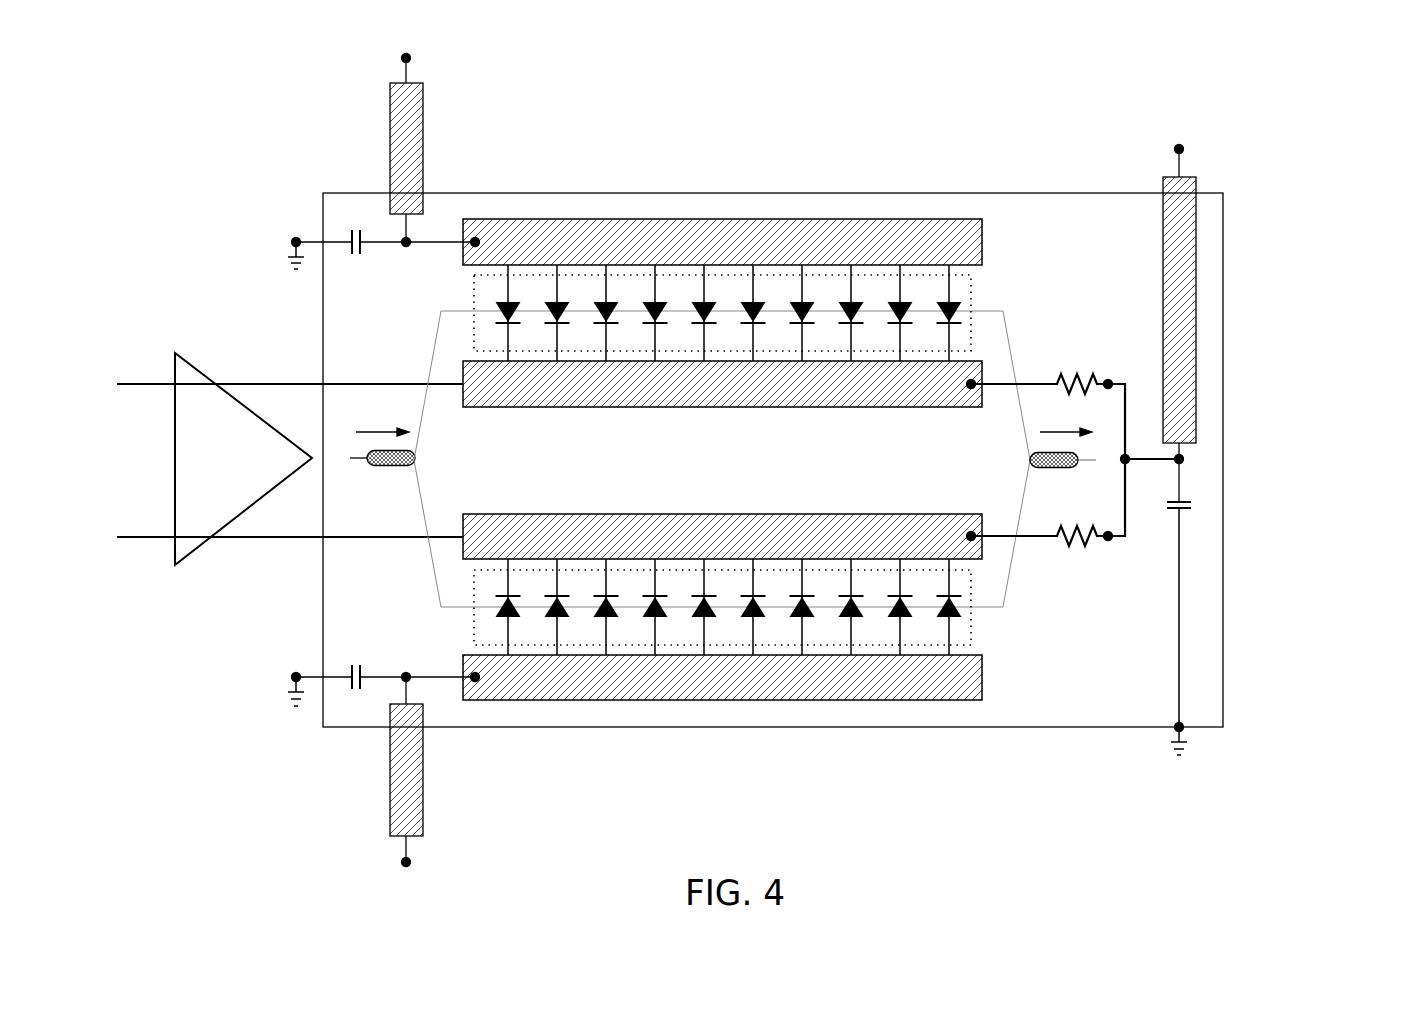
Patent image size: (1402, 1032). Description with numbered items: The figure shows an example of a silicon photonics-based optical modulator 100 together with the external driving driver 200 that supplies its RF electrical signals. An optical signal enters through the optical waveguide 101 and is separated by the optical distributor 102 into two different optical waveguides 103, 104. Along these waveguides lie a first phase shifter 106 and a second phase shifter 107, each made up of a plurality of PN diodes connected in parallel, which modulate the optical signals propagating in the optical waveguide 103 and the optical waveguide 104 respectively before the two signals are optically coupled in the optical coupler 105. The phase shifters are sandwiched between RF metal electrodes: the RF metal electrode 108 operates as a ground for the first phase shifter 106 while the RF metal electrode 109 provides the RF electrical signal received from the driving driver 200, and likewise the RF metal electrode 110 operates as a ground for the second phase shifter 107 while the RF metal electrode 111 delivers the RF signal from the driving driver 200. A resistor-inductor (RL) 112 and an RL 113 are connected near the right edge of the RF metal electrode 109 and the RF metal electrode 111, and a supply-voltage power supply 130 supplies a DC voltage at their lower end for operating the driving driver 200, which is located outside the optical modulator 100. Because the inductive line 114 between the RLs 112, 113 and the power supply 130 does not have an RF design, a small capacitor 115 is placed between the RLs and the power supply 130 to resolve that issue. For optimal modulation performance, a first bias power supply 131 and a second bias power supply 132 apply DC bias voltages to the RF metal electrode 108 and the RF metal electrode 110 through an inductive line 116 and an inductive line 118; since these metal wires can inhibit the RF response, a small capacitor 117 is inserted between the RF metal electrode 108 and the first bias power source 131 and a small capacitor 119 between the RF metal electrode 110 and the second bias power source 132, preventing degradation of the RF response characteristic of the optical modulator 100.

The optical modulator 100 is at (773, 192).
The optical waveguide 101 is at (360, 458).
The optical distributor 102 is at (388, 467).
The optical waveguide 103 is at (437, 347).
The optical waveguide 104 is at (437, 568).
The optical coupler 105 is at (1055, 467).
The first phase shifter 106 is at (975, 293).
The second phase shifter 107 is at (975, 630).
The RF metal electrode 108 is at (985, 240).
The RF metal electrode 109 is at (915, 408).
The RF metal electrode 110 is at (985, 676).
The RF metal electrode 111 is at (915, 513).
The resistor-inductor 112 is at (1090, 372).
The resistor-inductor 113 is at (1083, 545).
The inductive line 114 is at (1196, 310).
The small capacitor 115 is at (1195, 500).
The inductive line 116 is at (424, 150).
The small capacitor 117 is at (362, 252).
The inductive line 118 is at (423, 770).
The small capacitor 119 is at (362, 664).
The power supply Vcc 130 is at (1185, 148).
The bias power supply Vb1 131 is at (400, 57).
The bias power supply Vb2 132 is at (400, 860).
The driving driver 200 is at (205, 372).